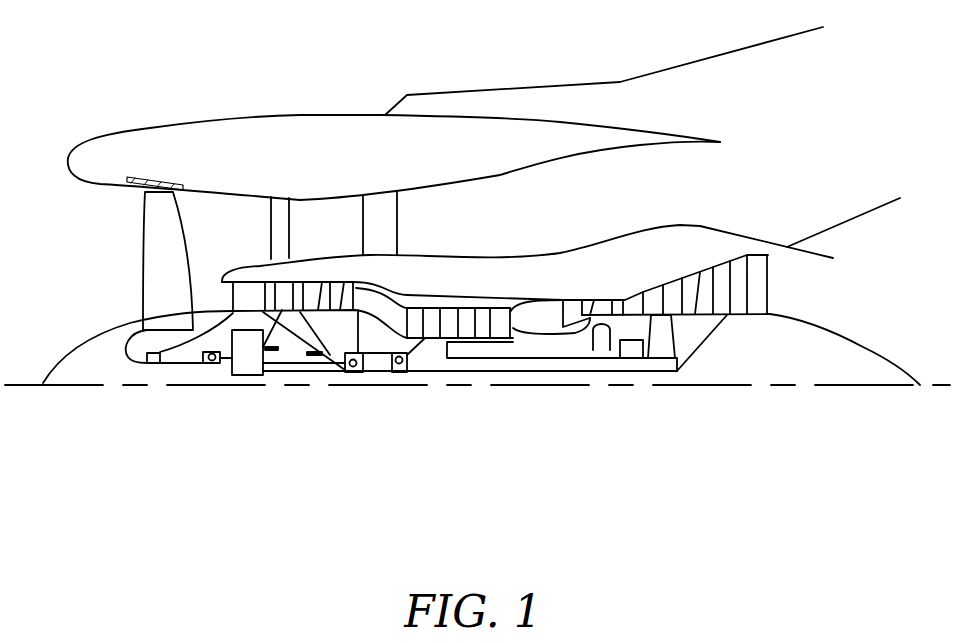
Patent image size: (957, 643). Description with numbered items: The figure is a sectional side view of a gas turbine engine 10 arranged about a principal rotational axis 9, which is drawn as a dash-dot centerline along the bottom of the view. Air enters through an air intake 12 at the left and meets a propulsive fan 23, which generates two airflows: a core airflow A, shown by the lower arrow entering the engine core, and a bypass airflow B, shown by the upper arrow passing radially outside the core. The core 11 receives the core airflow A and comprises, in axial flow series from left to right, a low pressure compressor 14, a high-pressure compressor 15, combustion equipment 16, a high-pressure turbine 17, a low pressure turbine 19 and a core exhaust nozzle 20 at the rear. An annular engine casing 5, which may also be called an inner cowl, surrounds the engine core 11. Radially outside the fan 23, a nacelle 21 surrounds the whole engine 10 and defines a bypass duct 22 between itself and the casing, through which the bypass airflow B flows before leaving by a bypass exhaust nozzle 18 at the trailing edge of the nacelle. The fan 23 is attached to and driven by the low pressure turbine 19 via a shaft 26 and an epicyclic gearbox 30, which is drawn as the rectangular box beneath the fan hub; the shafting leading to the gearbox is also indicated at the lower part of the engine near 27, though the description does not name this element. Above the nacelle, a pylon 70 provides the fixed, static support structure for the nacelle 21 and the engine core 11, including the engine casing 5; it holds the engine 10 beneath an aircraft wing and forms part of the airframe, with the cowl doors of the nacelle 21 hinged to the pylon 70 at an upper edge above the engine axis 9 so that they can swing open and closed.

The engine casing 5 is at (588, 272).
The principal rotational axis 9 is at (623, 388).
The gas turbine engine 10 is at (143, 127).
The core 11 is at (512, 275).
The air intake 12 is at (88, 210).
The low pressure compressor 14 is at (318, 290).
The high-pressure compressor 15 is at (462, 322).
The combustion equipment 16 is at (538, 320).
The high-pressure turbine 17 is at (603, 303).
The bypass exhaust nozzle 18 is at (722, 183).
The low pressure turbine 19 is at (738, 275).
The core exhaust nozzle 20 is at (808, 288).
The nacelle 21 is at (370, 147).
The bypass duct 22 is at (641, 198).
The propulsive fan 23 is at (150, 263).
The shaft 26 is at (457, 372).
The outer shaft 27 is at (497, 371).
The epicyclic gearbox 30 is at (245, 365).
The pylon 70 is at (781, 105).
The core airflow A is at (218, 297).
The bypass airflow B is at (218, 232).